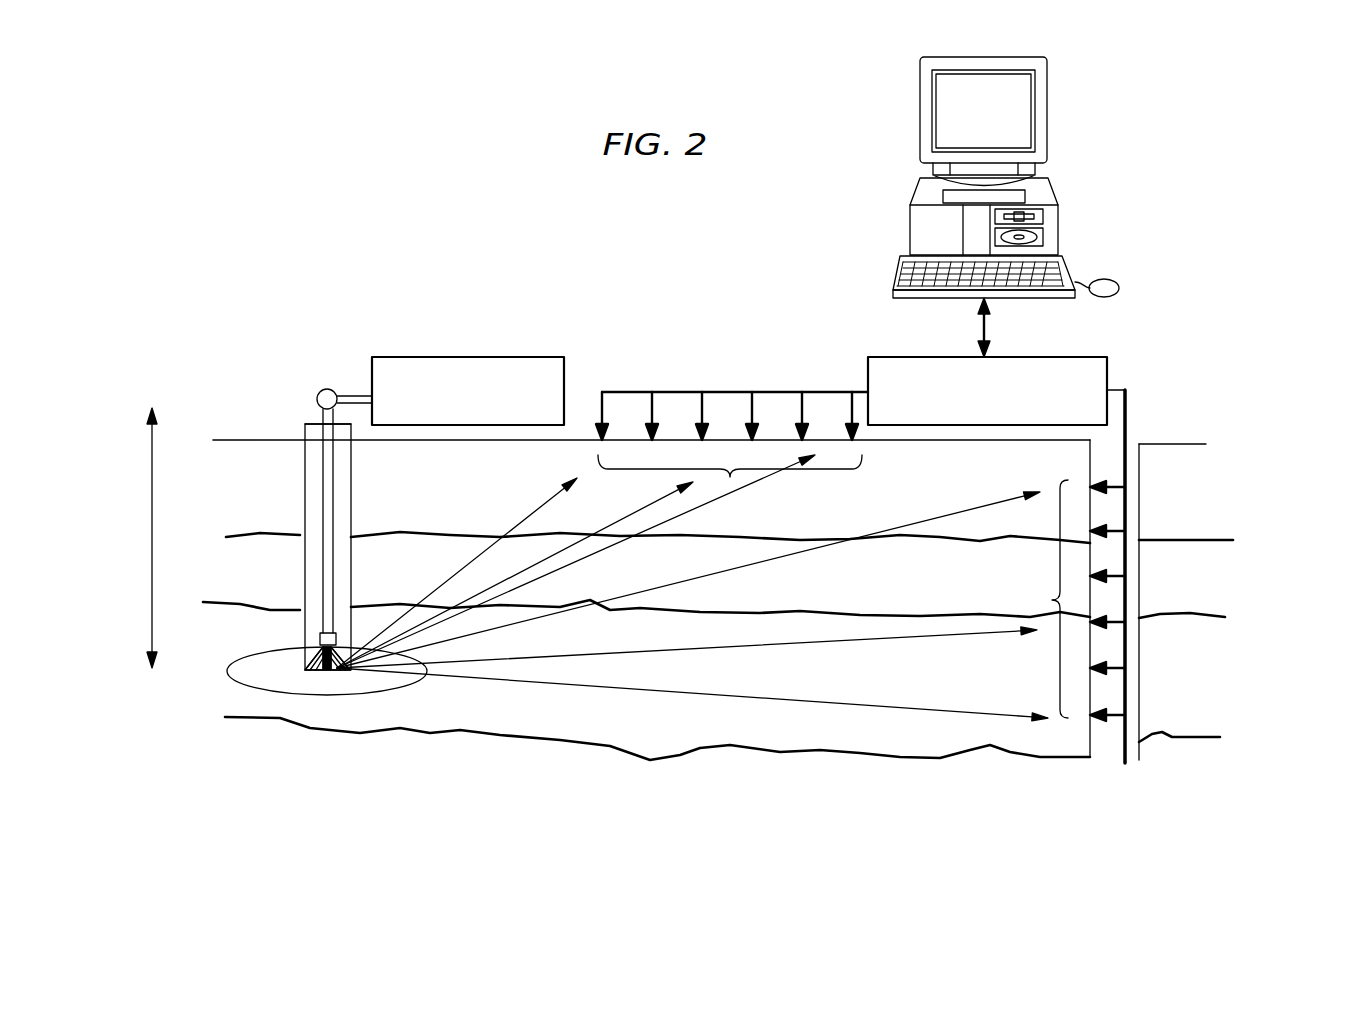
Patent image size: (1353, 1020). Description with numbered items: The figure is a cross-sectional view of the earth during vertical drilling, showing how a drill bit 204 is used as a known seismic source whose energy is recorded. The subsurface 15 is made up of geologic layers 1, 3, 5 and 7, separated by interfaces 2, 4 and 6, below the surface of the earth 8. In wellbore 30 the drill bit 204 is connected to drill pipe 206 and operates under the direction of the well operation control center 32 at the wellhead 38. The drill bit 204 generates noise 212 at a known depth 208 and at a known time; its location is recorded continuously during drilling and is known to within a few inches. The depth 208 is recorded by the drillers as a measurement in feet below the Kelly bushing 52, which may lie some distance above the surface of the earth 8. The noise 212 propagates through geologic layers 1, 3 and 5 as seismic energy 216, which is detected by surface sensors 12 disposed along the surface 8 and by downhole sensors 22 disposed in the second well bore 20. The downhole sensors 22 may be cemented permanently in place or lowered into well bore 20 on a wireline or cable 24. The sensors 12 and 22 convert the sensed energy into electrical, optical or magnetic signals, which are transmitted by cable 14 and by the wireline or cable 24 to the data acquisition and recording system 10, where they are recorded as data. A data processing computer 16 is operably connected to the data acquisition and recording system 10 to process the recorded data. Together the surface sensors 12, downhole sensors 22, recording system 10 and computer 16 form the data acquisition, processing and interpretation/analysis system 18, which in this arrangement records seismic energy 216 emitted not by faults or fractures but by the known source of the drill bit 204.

The geologic layer 1 is at (824, 511).
The interface 2 is at (935, 541).
The geologic layer 3 is at (824, 589).
The interface 4 is at (935, 618).
The geologic layer 5 is at (824, 690).
The interface 6 is at (935, 761).
The geologic layer 7 is at (824, 820).
The surface of the earth 8 is at (206, 436).
The data acquisition and recording system 10 is at (1107, 358).
The surface sensors 12 is at (690, 512).
The cable 14 is at (730, 392).
The subsurface 15 is at (1255, 503).
The data processing computer 16 is at (1060, 186).
The data acquisition, processing and interpretation/analysis system 18 is at (1218, 178).
The well bore 20 is at (1130, 571).
The downhole sensors 22 is at (1047, 599).
The wireline or cable 24 is at (1130, 412).
The wellbore 30 is at (305, 485).
The well operation control center 32 is at (449, 357).
The wellhead 38 is at (305, 428).
The Kelly bushing 52 is at (330, 389).
The drill bit 204 is at (318, 660).
The drill pipe 206 is at (333, 486).
The depth 208 is at (152, 510).
The noise 212 is at (413, 688).
The seismic energy 216 is at (530, 516).